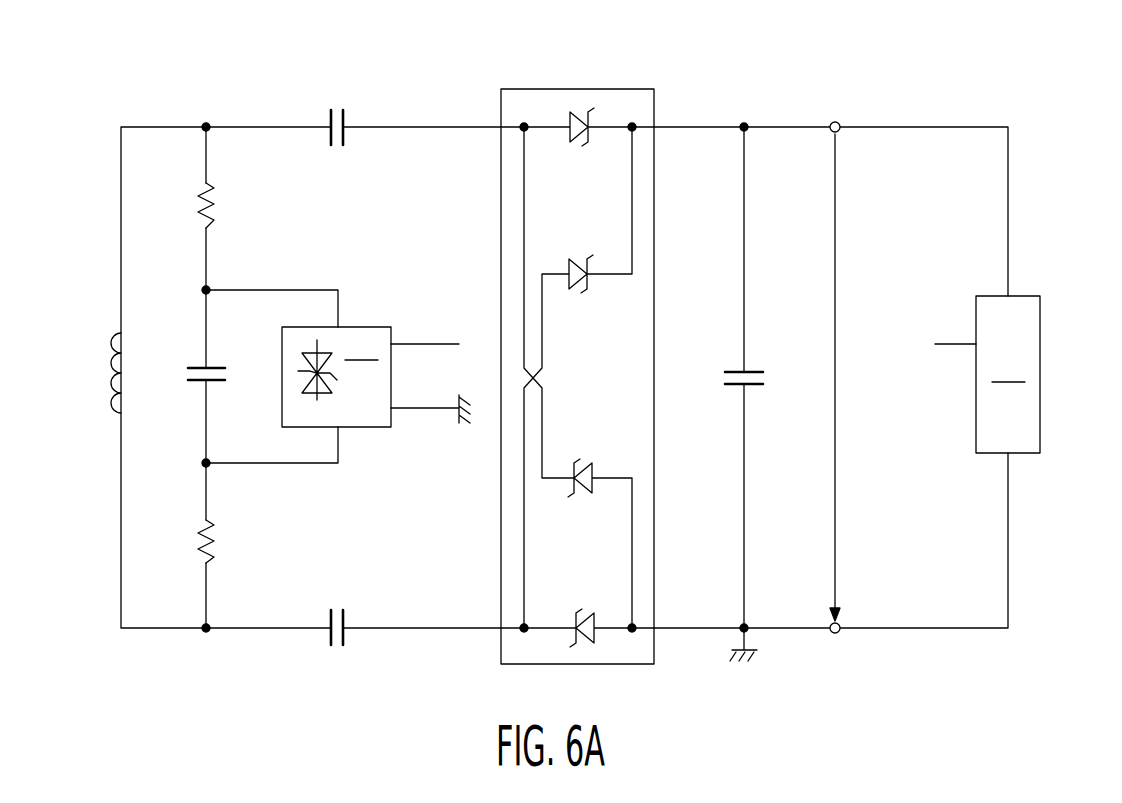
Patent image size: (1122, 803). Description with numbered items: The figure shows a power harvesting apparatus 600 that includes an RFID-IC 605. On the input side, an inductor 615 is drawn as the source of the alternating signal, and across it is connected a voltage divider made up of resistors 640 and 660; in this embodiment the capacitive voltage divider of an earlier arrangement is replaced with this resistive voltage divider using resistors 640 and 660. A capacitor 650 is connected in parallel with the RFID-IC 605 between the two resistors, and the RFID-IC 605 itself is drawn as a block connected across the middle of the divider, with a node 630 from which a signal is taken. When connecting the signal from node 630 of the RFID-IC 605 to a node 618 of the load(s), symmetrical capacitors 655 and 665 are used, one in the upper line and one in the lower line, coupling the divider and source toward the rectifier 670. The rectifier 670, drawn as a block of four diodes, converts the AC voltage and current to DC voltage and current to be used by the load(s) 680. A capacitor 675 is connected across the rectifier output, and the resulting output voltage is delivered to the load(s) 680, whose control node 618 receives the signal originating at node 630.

The power harvesting apparatus 600 is at (1071, 145).
The RFID-IC 605 is at (336, 377).
The inductor winding 615 is at (117, 333).
The node of load(s) 618 is at (944, 344).
The node of the RFID-IC 630 is at (392, 344).
The resistor 640 is at (215, 205).
The capacitor 650 is at (215, 367).
The symmetrical capacitor 655 is at (330, 118).
The resistor 660 is at (215, 540).
The symmetrical capacitor 665 is at (330, 640).
The rectifier 670 is at (585, 89).
The output capacitor 675 is at (735, 368).
The load(s) 680 is at (1008, 374).